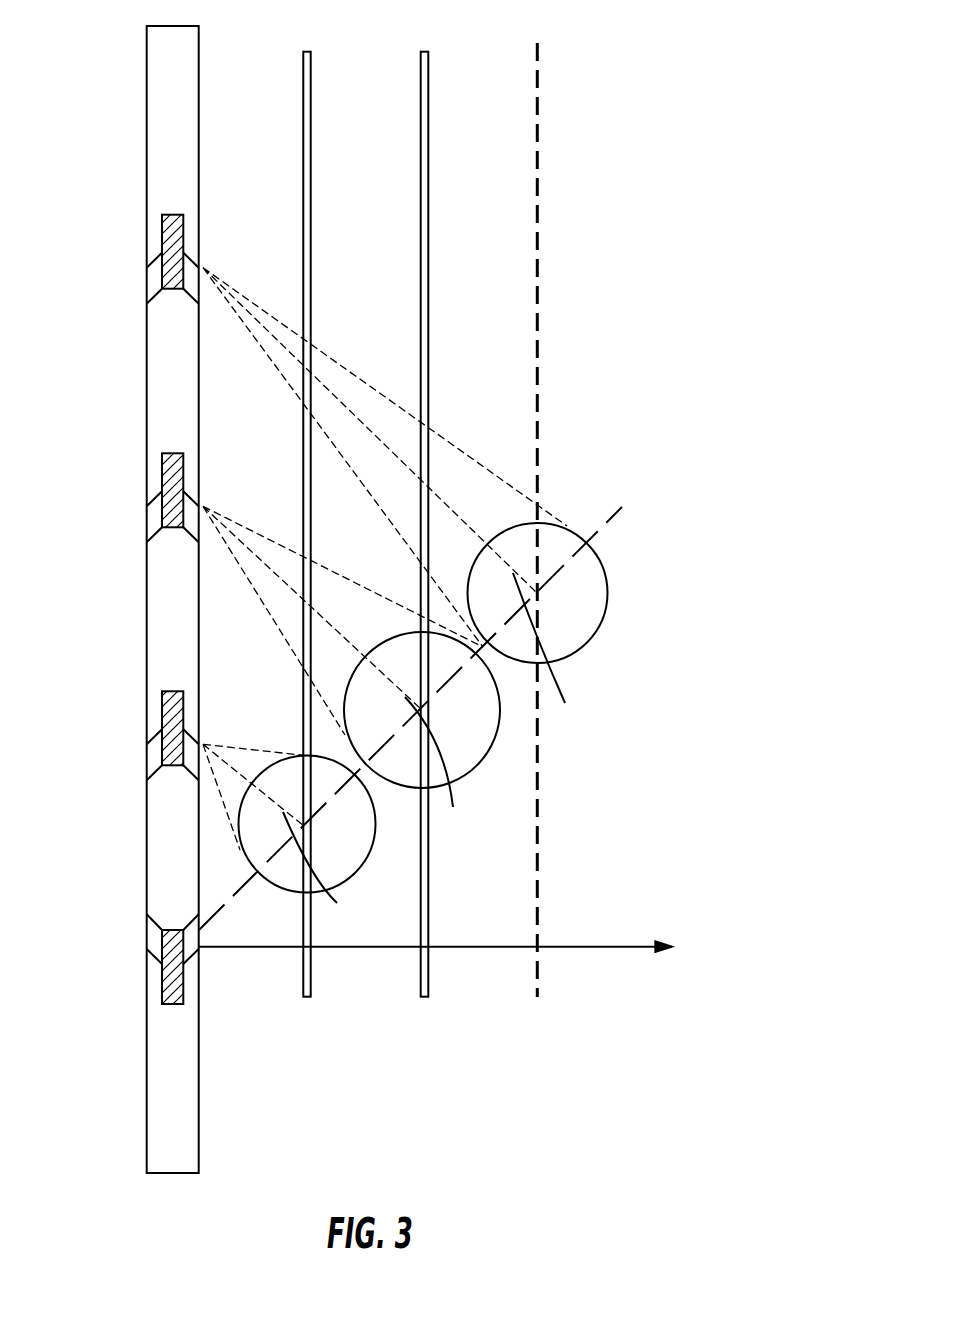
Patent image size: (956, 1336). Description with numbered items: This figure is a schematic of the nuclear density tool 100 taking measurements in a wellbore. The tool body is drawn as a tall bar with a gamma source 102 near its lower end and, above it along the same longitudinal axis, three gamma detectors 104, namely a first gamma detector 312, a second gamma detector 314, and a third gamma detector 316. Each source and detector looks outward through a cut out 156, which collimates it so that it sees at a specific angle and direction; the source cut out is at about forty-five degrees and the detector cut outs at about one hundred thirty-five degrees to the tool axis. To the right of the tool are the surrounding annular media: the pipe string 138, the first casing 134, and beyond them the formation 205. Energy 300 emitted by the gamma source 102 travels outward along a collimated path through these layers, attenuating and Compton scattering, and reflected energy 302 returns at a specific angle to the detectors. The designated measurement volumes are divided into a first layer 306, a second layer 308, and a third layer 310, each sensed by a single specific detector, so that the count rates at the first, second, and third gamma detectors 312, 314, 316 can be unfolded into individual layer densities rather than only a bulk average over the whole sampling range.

The nuclear density tool 100 is at (148, 97).
The gamma source 102 is at (162, 990).
The gamma detector 104 is at (162, 230).
The cut out 156 is at (148, 288).
The pipe string 138 is at (308, 50).
The first casing 134 is at (425, 50).
The formation 205 is at (537, 50).
The energy 300 is at (223, 908).
The reflected energy 302 is at (434, 756).
The first layer 306 is at (367, 850).
The second layer 308 is at (478, 752).
The third layer 310 is at (583, 638).
The first gamma detector 312 is at (172, 766).
The second gamma detector 314 is at (172, 528).
The third gamma detector 316 is at (173, 290).